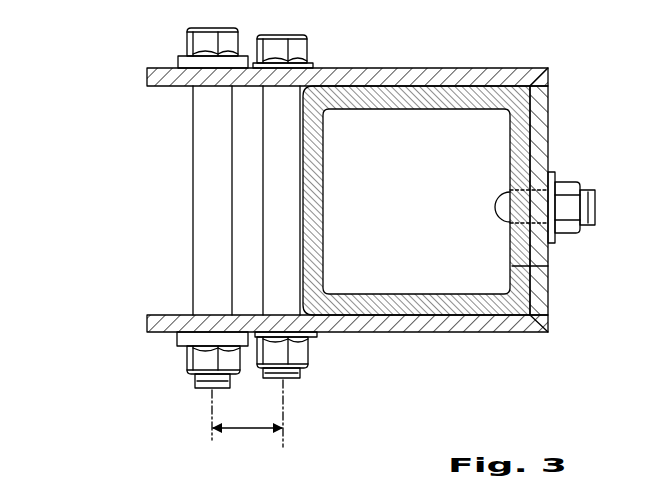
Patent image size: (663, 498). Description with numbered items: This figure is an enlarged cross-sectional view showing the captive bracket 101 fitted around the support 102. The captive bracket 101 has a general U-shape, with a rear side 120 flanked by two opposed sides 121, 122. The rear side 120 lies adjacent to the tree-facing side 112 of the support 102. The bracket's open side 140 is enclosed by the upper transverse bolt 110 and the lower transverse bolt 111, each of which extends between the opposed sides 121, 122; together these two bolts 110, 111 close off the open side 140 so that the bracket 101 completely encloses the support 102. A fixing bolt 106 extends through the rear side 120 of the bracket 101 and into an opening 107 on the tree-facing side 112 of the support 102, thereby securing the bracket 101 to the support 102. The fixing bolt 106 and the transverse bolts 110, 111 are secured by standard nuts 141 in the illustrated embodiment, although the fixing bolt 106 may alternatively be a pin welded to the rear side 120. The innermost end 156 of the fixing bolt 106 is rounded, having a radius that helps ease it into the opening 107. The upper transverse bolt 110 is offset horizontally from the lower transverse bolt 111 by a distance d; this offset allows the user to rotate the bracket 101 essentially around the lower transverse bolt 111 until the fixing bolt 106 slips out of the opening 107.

The captive bracket 101 is at (551, 64).
The support 102 is at (323, 240).
The fixing bolt 106 is at (512, 190).
The opening 107 is at (512, 225).
The upper transverse bolt 110 is at (210, 175).
The lower transverse bolt 111 is at (280, 227).
The tree-facing side 112 is at (548, 266).
The rear side 120 is at (380, 202).
The opposed side 121 is at (393, 68).
The opposed side 122 is at (393, 333).
The open side 140 is at (313, 171).
The nut 141 is at (186, 360).
The innermost end 156 is at (494, 209).
The distance d is at (247, 419).